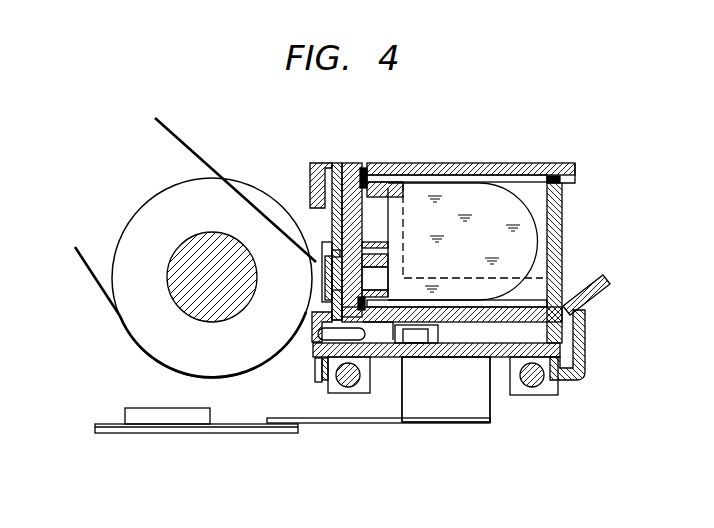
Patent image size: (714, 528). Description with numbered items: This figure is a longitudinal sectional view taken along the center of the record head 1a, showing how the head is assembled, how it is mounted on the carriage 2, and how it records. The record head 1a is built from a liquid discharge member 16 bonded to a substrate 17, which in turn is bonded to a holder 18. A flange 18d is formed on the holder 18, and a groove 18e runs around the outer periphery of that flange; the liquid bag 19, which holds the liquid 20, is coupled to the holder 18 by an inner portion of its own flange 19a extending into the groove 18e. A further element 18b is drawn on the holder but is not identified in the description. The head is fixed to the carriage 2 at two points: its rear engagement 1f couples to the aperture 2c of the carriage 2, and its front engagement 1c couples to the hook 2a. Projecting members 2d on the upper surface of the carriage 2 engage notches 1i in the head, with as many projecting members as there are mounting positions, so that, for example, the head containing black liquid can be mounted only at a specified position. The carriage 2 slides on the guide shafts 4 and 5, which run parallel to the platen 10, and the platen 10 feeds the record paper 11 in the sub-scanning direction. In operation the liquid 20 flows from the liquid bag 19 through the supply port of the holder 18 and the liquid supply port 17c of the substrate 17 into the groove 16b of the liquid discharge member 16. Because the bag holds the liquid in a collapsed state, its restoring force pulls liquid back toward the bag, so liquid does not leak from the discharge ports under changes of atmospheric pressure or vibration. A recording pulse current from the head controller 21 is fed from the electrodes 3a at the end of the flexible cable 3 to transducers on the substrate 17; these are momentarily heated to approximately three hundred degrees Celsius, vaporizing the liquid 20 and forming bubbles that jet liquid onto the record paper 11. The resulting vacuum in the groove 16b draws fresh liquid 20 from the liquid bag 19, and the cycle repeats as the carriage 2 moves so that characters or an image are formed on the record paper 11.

The record head 1a is at (537, 163).
The front engagement 1c is at (583, 325).
The rear engagement 1f is at (325, 372).
The notch 1i is at (440, 332).
The carriage 2 is at (500, 360).
The hook 2a is at (610, 283).
The aperture 2c is at (313, 330).
The projecting member 2d is at (403, 333).
The flexible cable 3 is at (489, 411).
The electrode 3a is at (327, 163).
The guide shaft 4 is at (350, 387).
The guide shaft 5 is at (535, 388).
The platen 10 is at (128, 250).
The record paper 11 is at (175, 136).
The liquid discharge member 16 is at (322, 270).
The groove 16b is at (318, 246).
The substrate 17 is at (337, 163).
The liquid supply port 17c is at (327, 252).
The holder 18 is at (346, 163).
The seal member 18b is at (360, 176).
The flange 18d is at (366, 312).
The groove 18e is at (403, 205).
The liquid bag 19 is at (540, 236).
The flange 19a is at (365, 180).
The liquid 20 is at (467, 197).
The head controller 21 is at (171, 432).